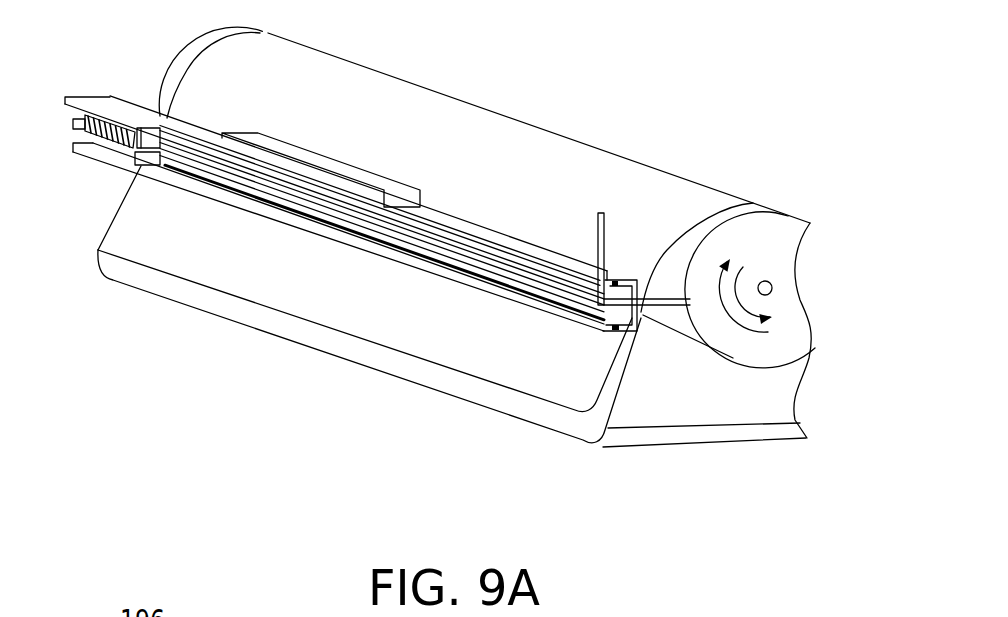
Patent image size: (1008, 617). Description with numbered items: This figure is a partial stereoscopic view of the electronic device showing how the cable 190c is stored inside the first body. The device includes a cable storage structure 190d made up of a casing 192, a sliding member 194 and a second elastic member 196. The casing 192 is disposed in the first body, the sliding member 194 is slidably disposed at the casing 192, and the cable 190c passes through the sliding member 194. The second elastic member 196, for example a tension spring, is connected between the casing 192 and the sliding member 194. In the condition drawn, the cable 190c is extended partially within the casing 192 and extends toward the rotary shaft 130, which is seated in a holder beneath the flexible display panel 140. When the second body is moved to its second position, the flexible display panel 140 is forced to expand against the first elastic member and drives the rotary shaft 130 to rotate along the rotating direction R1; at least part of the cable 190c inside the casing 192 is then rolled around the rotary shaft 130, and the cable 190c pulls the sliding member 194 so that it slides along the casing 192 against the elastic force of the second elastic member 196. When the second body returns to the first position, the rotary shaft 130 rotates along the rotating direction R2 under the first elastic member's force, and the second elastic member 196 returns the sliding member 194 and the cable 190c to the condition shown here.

The rotary shaft 130 is at (780, 223).
The flexible display panel 140 is at (447, 357).
The cable 190c is at (655, 299).
The cable storage structure 190d is at (522, 215).
The casing 192 is at (441, 212).
The sliding member 194 is at (147, 130).
The second elastic member 196 is at (95, 110).
The rotating direction R1 is at (742, 335).
The rotating direction R2 is at (730, 307).